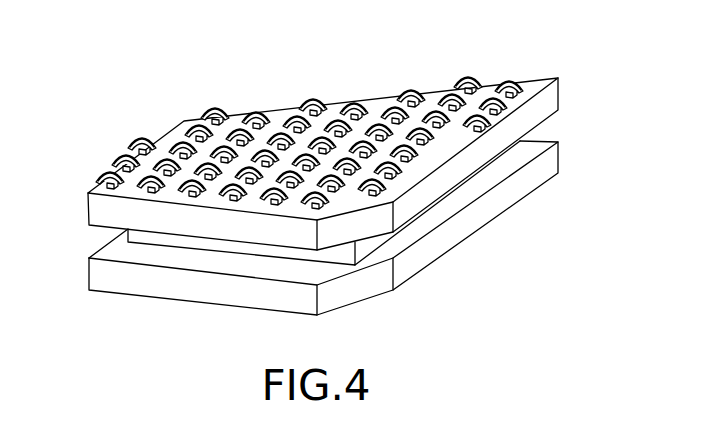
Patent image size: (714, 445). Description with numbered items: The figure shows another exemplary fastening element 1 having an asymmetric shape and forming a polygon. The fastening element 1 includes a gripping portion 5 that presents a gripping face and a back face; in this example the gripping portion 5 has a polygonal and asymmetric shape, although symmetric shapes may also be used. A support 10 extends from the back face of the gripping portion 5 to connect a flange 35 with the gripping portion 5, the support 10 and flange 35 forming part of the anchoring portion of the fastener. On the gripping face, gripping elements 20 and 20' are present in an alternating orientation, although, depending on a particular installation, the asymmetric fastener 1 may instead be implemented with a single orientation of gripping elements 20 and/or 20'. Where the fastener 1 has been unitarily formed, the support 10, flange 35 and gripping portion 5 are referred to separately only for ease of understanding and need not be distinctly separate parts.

The fastening element 1 is at (560, 48).
The gripping portion 5 is at (96, 191).
The support 10 is at (138, 233).
The gripping elements 20 is at (309, 120).
The gripping elements 20' is at (395, 87).
The flange 35 is at (135, 278).